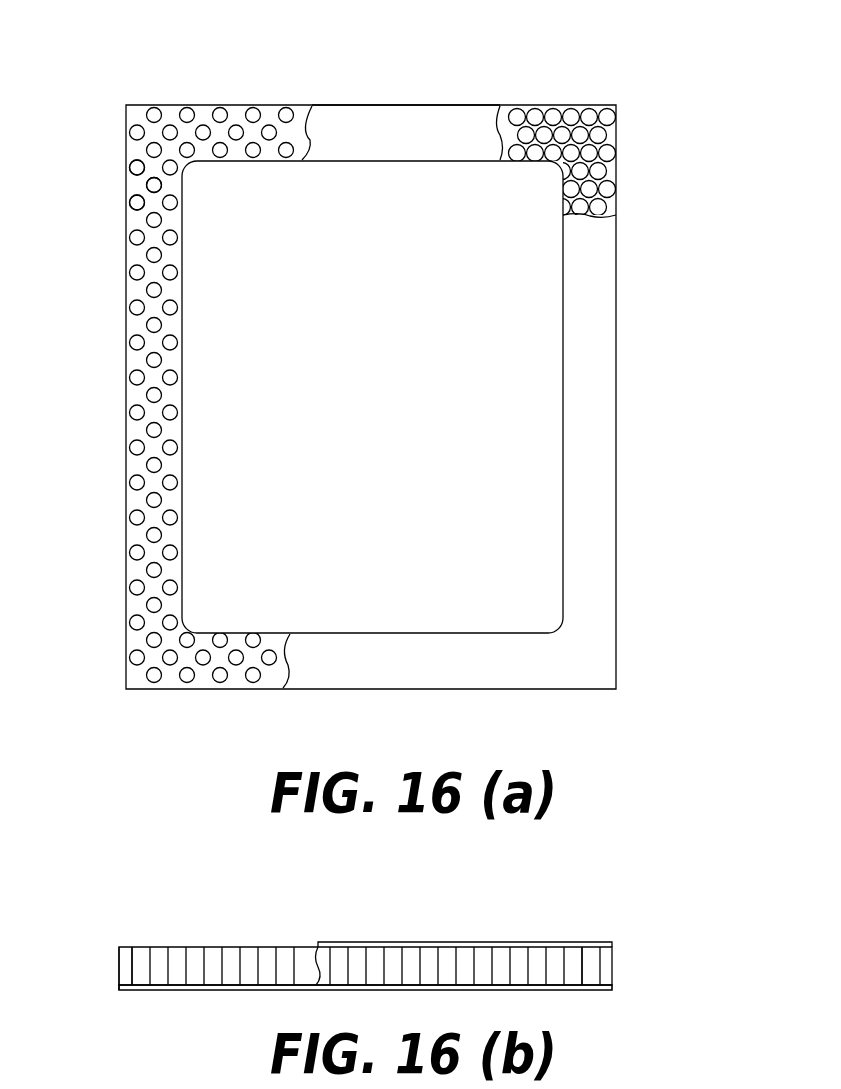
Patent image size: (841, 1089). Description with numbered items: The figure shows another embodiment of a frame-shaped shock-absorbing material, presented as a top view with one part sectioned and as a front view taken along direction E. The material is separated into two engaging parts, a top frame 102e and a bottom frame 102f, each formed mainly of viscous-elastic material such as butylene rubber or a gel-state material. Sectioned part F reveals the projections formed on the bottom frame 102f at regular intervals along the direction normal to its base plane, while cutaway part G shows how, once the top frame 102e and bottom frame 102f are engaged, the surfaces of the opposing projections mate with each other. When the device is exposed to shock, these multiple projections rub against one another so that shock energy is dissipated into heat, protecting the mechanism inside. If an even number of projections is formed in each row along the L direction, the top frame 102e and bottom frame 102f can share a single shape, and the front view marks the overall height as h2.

The top frame 102e is at (365, 122).
The bottom frame 102f is at (127, 365).
The view direction E is at (370, 690).
The sectioned part F is at (222, 690).
The cutaway part G is at (506, 104).
The L direction L is at (647, 689).
The height h2 is at (612, 942).